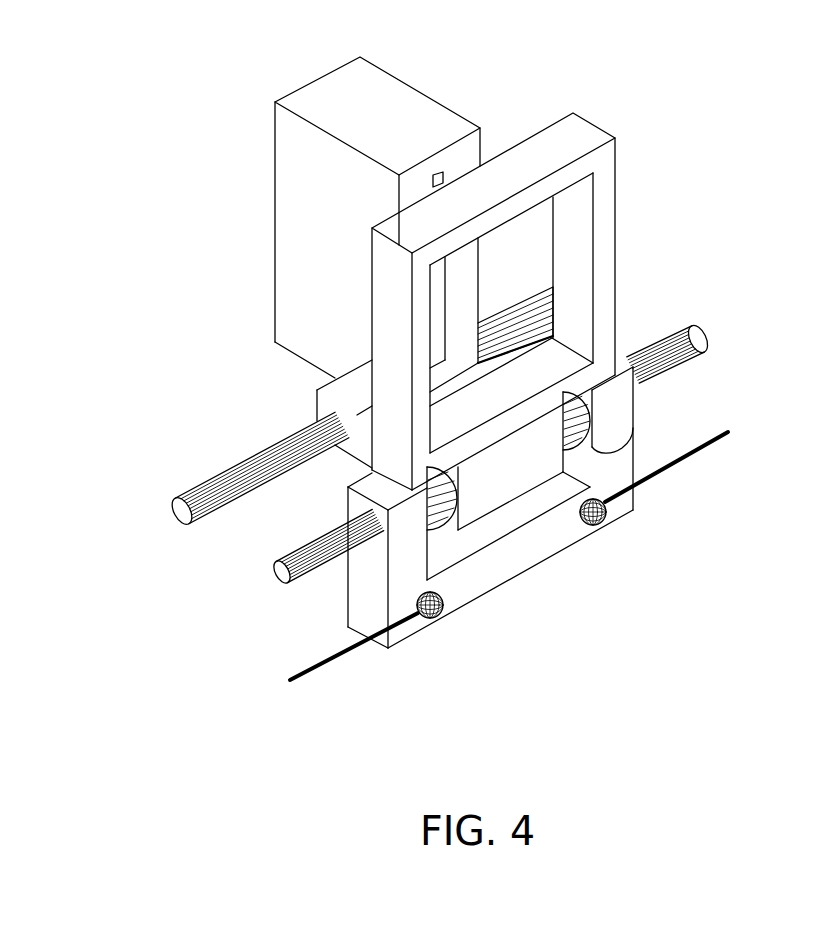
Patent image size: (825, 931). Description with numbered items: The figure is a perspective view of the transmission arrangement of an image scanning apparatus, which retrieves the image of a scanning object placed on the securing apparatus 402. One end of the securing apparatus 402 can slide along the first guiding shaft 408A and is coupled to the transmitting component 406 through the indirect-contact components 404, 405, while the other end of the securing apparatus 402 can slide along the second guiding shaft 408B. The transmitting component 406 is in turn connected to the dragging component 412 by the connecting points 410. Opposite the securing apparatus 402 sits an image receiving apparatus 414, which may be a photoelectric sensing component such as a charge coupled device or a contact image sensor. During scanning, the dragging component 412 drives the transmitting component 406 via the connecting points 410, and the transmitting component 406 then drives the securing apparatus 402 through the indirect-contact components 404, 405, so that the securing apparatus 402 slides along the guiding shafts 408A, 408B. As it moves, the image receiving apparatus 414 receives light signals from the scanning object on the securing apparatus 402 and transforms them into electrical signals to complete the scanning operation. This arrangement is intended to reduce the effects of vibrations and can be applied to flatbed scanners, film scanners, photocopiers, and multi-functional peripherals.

The securing apparatus 402 is at (576, 136).
The indirect-contact component 404 is at (637, 430).
The indirect-contact component 405 is at (427, 558).
The transmitting component 406 is at (535, 545).
The first guiding shaft 408A is at (665, 337).
The second guiding shaft 408B is at (196, 486).
The connecting point 410 is at (605, 530).
The dragging component 412 is at (711, 448).
The image receiving apparatus 414 is at (319, 95).